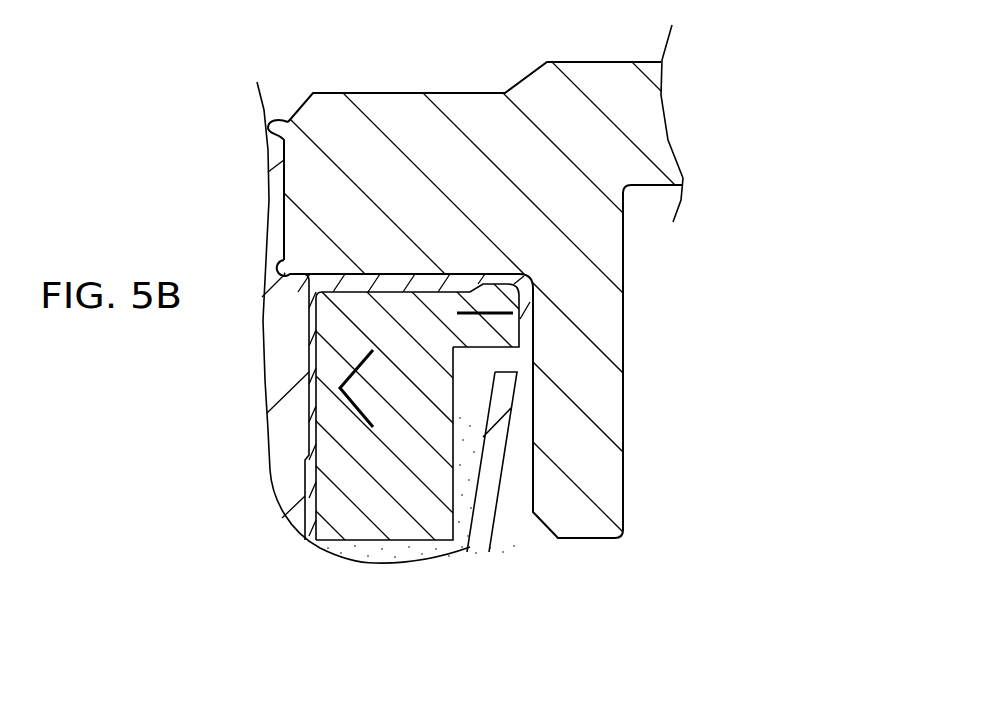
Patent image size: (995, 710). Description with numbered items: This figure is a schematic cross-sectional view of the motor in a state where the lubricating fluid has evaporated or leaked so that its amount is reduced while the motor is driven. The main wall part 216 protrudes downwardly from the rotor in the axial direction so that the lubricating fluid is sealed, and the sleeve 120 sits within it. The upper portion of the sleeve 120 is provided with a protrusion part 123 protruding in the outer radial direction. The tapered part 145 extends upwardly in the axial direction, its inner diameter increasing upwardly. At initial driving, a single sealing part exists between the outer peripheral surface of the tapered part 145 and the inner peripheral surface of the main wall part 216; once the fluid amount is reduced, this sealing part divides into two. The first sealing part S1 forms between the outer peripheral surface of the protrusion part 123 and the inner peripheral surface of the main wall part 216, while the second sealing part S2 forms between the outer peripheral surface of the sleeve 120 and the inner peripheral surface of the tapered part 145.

The main wall part 216 is at (600, 312).
The protrusion part 123 is at (492, 292).
The sleeve 120 is at (322, 476).
The tapered part 145 is at (488, 480).
The first sealing part S1 is at (520, 334).
The second sealing part S2 is at (452, 400).